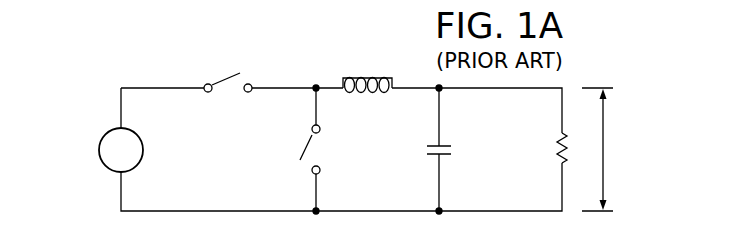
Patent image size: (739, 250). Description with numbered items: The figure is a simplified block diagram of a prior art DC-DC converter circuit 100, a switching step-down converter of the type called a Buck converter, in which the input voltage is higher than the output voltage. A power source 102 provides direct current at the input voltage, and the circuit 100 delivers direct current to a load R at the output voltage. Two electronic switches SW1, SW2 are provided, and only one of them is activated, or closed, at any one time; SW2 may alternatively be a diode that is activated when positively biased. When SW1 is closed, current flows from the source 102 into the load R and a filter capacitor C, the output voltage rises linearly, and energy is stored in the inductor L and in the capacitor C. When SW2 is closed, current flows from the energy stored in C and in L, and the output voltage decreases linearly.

The DC-DC converter circuit 100 is at (153, 60).
The power source 102 is at (100, 148).
The first electronic switch SW1 is at (228, 97).
The second electronic switch SW2 is at (331, 149).
The inductor L is at (367, 100).
The filter capacitor C is at (449, 149).
The load R is at (570, 148).